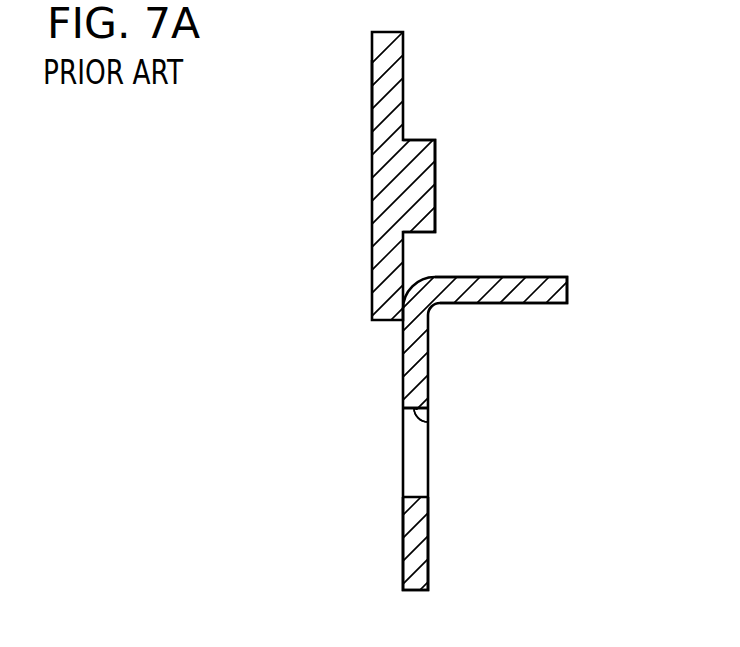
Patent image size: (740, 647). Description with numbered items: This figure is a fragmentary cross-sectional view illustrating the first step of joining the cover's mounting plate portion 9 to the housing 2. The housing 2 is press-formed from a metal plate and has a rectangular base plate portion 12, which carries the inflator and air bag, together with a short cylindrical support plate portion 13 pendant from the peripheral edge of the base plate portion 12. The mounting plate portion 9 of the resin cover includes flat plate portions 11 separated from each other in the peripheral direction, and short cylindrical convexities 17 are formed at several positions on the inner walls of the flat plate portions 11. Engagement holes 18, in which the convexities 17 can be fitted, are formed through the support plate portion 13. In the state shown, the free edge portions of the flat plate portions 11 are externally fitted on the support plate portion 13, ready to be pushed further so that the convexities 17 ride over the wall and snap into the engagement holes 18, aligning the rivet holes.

The mounting plate portion 9 is at (372, 62).
The flat plate portion 11 is at (375, 102).
The short cylindrical convexity 17 is at (435, 184).
The housing 2 is at (513, 278).
The base plate portion 12 is at (542, 276).
The engagement hole 18 is at (428, 428).
The support plate portion 13 is at (420, 553).